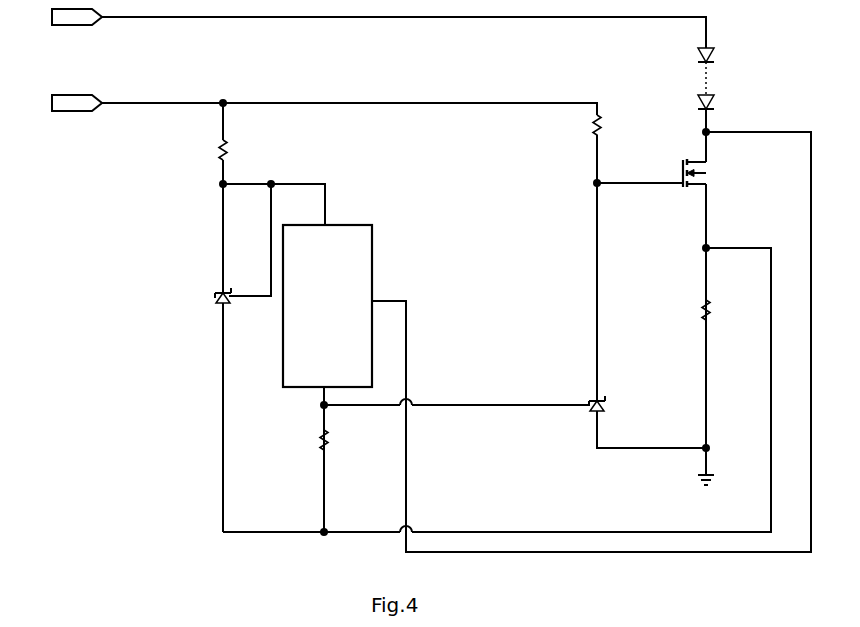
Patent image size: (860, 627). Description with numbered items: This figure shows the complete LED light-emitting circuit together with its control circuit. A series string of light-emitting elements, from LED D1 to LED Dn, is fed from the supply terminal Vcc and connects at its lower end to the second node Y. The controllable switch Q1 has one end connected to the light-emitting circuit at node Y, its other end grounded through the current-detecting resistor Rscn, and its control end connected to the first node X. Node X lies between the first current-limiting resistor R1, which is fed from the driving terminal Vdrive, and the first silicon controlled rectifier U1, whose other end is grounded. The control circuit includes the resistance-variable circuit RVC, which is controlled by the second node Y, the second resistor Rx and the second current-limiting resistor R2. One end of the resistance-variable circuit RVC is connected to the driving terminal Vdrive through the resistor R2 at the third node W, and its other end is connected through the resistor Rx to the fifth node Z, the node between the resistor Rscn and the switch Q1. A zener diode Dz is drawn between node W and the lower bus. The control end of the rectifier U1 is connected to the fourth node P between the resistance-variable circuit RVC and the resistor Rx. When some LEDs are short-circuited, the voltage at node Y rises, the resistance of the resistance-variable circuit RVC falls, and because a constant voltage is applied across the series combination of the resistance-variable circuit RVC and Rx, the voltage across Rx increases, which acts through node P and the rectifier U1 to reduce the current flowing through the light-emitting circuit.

The supply voltage input port Vcc is at (379, 31).
The driving terminal Vdrive is at (323, 118).
The LED D1 is at (693, 71).
The LED Dn is at (693, 128).
The second node Y is at (591, 338).
The first current-limiting resistor R1 is at (613, 257).
The first node X is at (622, 185).
The controllable switch Q1 is at (709, 303).
The fifth node Z is at (497, 386).
The current-detecting resistor Rscn is at (684, 310).
The first silicon controlled rectifier U1 is at (647, 422).
The second current-limiting resistor R2 is at (236, 198).
The third node W is at (272, 230).
The zener diode Dz is at (223, 410).
The resistance-variable circuit RVC is at (327, 306).
The fourth node P is at (447, 461).
The second resistor Rx is at (306, 440).